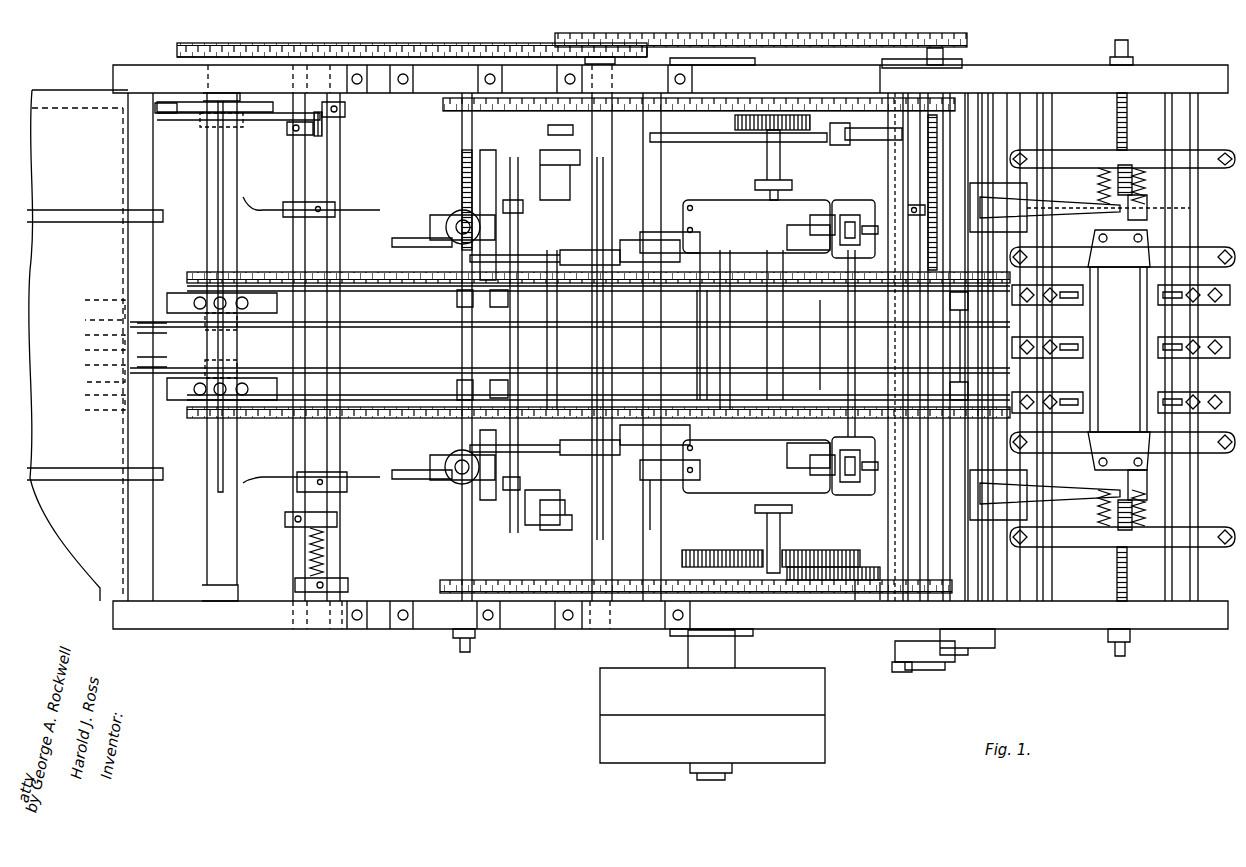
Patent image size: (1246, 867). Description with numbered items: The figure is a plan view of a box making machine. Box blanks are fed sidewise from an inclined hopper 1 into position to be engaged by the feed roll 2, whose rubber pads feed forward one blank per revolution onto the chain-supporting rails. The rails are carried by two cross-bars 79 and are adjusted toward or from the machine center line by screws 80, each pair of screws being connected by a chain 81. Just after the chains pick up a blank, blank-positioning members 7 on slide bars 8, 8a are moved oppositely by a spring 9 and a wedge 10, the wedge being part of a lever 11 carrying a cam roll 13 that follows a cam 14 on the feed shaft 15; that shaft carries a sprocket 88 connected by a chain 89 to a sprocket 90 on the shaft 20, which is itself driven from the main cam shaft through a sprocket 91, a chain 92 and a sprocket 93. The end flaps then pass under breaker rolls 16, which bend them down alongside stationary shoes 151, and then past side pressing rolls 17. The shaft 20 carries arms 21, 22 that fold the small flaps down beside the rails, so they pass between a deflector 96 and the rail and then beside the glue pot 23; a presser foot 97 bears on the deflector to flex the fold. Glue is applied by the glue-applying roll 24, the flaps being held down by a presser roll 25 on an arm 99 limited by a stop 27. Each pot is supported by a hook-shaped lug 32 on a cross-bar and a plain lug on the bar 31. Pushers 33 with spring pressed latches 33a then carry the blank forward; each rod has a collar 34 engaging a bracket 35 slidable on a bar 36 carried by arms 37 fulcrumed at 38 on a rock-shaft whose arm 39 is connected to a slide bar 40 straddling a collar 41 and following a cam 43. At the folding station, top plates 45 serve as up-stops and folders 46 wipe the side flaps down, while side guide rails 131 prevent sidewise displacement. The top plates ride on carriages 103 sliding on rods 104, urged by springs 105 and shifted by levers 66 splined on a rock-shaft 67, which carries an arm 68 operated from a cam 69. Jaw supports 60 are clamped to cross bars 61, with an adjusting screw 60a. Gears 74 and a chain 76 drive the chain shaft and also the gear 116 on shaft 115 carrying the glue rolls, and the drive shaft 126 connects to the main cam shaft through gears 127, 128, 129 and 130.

The inclined hopper 1 is at (55, 218).
The feed roll 2 is at (268, 312).
The blank-positioning member 7 is at (262, 488).
The slide bar 8 is at (290, 500).
The slide bar 8a is at (342, 497).
The spring 9 is at (310, 553).
The wedge 10 is at (322, 128).
The lever 11 is at (271, 121).
The cam roll 13 is at (158, 106).
The cam 14 is at (243, 102).
The feed shaft 15 is at (207, 150).
The breaker roll 16 is at (430, 228).
The side pressing roll 17 is at (448, 215).
The shaft 20 is at (610, 117).
The arm 21 is at (565, 250).
The arm 22 is at (630, 240).
The glue pot 23 is at (756, 346).
The glue-applying roll 24 is at (808, 346).
The presser roll 25 is at (785, 235).
The stop 27 is at (850, 205).
The bar 31 is at (650, 160).
The lug 32 is at (885, 243).
The pusher 33 is at (822, 390).
The spring pressed latch 33a is at (950, 392).
The collar 34 is at (488, 385).
The bracket 35 is at (508, 385).
The bar 36 is at (530, 515).
The arm 37 is at (538, 163).
The fulcrum 38 is at (550, 210).
The arm 39 is at (552, 148).
The slide bar 40 is at (692, 142).
The collar 41 is at (950, 160).
The cam 43 is at (915, 128).
The top plate 45 is at (1119, 350).
The folder 46 is at (1088, 303).
The support 60 is at (1058, 150).
The screw 60a is at (1130, 50).
The cross bar 61 is at (1030, 112).
The lever 66 is at (1065, 210).
The rock-shaft 67 is at (990, 605).
The arm 68 is at (963, 649).
The cam 69 is at (895, 672).
The gear 74 is at (945, 128).
The chain 76 is at (1010, 110).
The cross-bar 79 is at (893, 160).
The screw 80 is at (478, 128).
The chain 81 is at (518, 98).
The sprocket 88 is at (177, 50).
The chain 89 is at (390, 43).
The sprocket 90 is at (607, 57).
The sprocket 91 is at (965, 40).
The chain 92 is at (755, 33).
The sprocket 93 is at (556, 36).
The deflector 96 is at (655, 233).
The presser foot 97 is at (488, 190).
The arm 99 is at (820, 240).
The carriage 103 is at (1147, 213).
The rod 104 is at (1140, 165).
The spring 105 is at (1150, 185).
The shaft 115 is at (778, 582).
The gear 116 is at (772, 115).
The drive shaft 126 is at (705, 550).
The gear 127 is at (855, 603).
The gear 128 is at (880, 630).
The gear 129 is at (858, 548).
The gear 130 is at (690, 590).
The side guide rail 131 is at (1170, 470).
The stationary shoe 151 is at (395, 246).